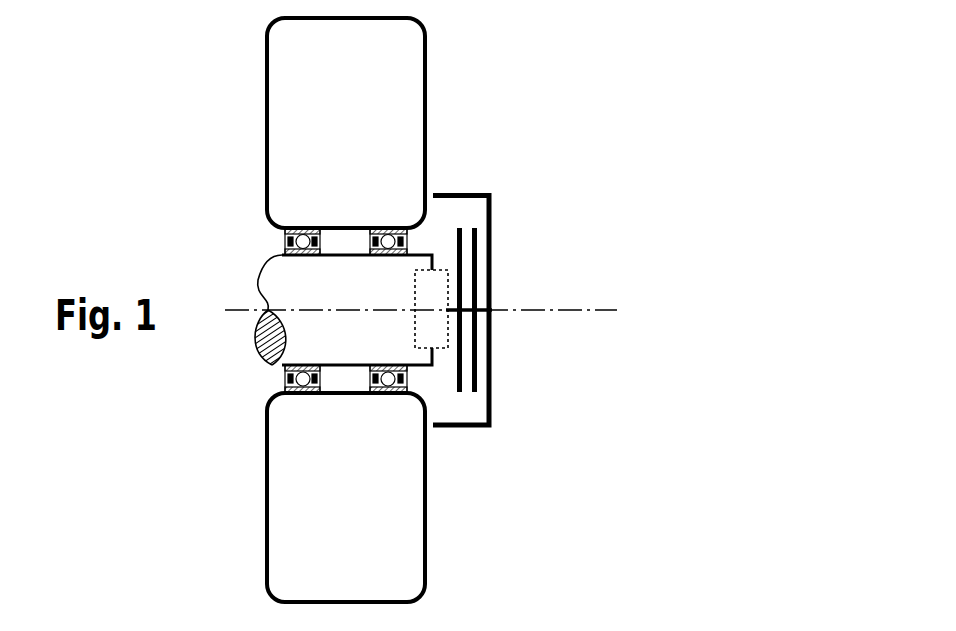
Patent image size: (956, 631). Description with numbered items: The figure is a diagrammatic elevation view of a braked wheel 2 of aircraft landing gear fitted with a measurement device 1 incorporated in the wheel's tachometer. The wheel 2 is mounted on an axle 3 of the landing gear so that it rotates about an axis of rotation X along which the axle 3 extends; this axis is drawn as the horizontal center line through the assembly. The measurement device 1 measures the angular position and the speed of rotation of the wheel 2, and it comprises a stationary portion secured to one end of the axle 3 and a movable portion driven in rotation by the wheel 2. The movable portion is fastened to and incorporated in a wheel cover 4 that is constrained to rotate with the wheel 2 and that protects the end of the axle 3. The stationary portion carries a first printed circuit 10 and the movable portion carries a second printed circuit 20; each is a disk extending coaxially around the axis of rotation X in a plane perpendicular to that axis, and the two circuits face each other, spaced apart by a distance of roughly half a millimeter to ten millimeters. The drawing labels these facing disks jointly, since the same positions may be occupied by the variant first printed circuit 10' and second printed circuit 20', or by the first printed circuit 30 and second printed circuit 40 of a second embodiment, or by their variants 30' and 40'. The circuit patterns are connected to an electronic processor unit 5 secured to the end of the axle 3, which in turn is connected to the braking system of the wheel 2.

The measurement device 1 is at (562, 383).
The braked wheel 2 is at (415, 87).
The axle 3 is at (270, 271).
The wheel cover 4 is at (464, 193).
The electronic processor unit 5 is at (438, 287).
The axis of rotation X is at (604, 308).
The first printed circuit 10 is at (562, 383).
The first printed circuit 10' is at (562, 383).
The first printed circuit 30 is at (562, 383).
The first printed circuit 30' is at (562, 383).
The second printed circuit 20 is at (569, 313).
The second printed circuit 20' is at (569, 313).
The second printed circuit 40 is at (569, 313).
The second printed circuit 40' is at (569, 313).